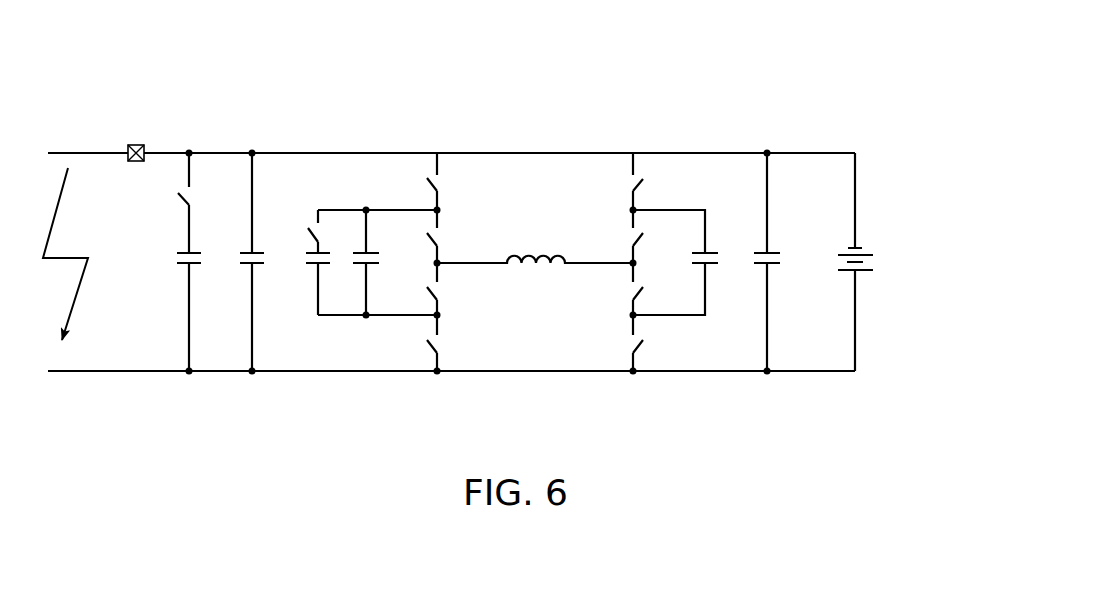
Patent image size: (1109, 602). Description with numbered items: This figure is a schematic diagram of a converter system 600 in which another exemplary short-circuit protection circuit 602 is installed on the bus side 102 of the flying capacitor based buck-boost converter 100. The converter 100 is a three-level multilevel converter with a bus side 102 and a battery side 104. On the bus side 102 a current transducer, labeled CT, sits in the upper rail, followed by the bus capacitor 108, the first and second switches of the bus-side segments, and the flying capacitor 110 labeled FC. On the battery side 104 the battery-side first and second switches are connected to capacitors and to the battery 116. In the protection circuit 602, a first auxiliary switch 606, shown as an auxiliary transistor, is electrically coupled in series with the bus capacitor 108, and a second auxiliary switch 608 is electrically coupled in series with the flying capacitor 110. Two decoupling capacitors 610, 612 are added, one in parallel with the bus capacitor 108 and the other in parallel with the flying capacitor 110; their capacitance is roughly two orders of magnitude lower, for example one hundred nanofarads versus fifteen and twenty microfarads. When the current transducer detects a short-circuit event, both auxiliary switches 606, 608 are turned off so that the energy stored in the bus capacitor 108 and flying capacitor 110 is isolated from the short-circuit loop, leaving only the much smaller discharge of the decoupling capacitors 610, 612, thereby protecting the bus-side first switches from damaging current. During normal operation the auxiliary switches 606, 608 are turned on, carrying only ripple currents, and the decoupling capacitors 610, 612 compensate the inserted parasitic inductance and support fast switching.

The converter system 600 is at (148, 63).
The short-circuit protection circuit 602 is at (320, 195).
The first auxiliary switch 606 is at (178, 195).
The bus capacitor 108 is at (176, 258).
The decoupling capacitor 610 is at (248, 268).
The second auxiliary switch 608 is at (307, 226).
The flying capacitor 110 is at (306, 248).
The decoupling capacitor 612 is at (360, 268).
The buck-boost converter 100 is at (803, 115).
The battery 116 is at (862, 247).
The bus side 102 is at (129, 384).
The battery side 104 is at (796, 383).